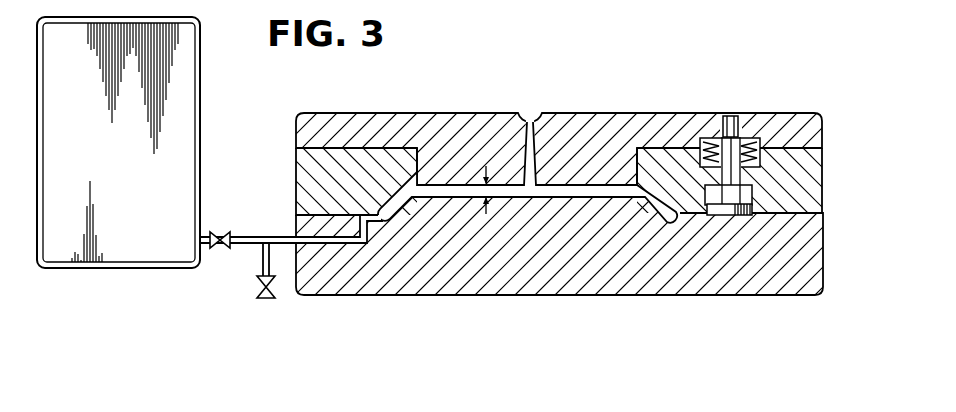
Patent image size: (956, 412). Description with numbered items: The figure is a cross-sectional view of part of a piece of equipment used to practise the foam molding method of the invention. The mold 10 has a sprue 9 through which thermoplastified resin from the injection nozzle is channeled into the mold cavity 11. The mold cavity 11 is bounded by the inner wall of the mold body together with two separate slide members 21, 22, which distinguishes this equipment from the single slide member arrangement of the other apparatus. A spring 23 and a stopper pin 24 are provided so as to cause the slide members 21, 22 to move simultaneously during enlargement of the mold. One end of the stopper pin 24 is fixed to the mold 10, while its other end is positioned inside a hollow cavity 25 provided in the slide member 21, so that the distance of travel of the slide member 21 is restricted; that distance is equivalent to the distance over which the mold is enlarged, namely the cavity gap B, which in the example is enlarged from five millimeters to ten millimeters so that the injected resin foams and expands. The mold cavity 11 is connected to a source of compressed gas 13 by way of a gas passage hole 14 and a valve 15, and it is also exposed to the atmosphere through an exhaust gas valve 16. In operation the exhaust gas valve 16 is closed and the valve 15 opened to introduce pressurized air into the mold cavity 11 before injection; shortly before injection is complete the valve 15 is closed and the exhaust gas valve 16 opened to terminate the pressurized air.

The sprue 9 is at (536, 150).
The mold 10 is at (633, 120).
The mold cavity 11 is at (437, 191).
The source of compressed gas 13 is at (148, 259).
The gas passage hole 14 is at (337, 245).
The valve 15 is at (217, 250).
The exhaust gas valve 16 is at (266, 300).
The slide member 21 is at (822, 176).
The slide member 22 is at (537, 289).
The spring 23 is at (742, 158).
The stopper pin 24 is at (738, 215).
The hollow cavity 25 is at (748, 194).
The cavity gap B is at (486, 193).